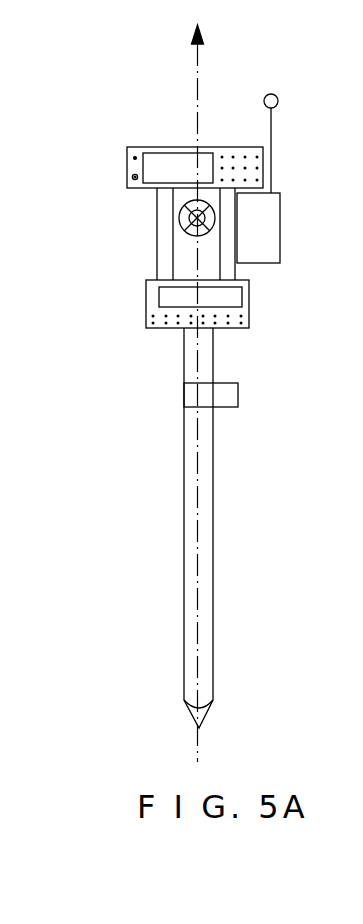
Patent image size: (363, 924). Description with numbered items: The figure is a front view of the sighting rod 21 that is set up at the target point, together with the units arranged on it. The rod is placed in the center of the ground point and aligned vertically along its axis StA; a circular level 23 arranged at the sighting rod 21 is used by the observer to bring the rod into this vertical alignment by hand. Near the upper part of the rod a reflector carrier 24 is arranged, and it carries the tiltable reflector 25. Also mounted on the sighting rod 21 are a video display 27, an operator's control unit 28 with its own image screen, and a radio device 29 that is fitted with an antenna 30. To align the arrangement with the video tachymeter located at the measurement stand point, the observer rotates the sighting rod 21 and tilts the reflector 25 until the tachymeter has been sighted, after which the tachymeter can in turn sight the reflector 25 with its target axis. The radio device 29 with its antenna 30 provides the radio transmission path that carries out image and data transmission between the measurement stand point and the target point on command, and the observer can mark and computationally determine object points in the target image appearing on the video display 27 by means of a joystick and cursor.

The stake axis StA is at (198, 80).
The sighting rod 21 is at (200, 557).
The circular level 23 is at (188, 399).
The reflector carrier 24 is at (160, 245).
The tiltable reflector 25 is at (180, 227).
The video display 27 is at (127, 167).
The operator's control unit 28 is at (165, 302).
The radio device 29 is at (263, 262).
The antenna 30 is at (273, 128).